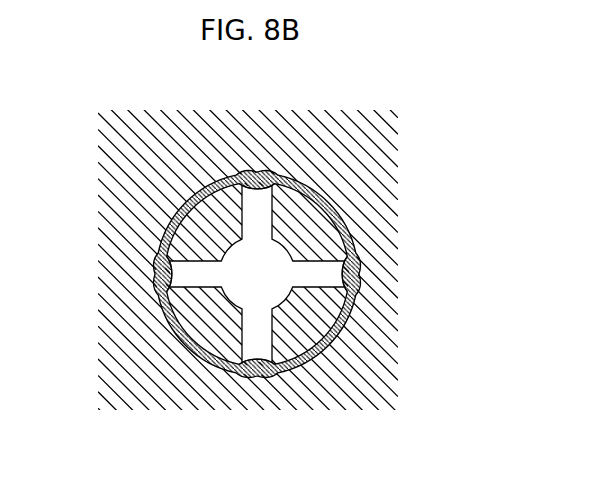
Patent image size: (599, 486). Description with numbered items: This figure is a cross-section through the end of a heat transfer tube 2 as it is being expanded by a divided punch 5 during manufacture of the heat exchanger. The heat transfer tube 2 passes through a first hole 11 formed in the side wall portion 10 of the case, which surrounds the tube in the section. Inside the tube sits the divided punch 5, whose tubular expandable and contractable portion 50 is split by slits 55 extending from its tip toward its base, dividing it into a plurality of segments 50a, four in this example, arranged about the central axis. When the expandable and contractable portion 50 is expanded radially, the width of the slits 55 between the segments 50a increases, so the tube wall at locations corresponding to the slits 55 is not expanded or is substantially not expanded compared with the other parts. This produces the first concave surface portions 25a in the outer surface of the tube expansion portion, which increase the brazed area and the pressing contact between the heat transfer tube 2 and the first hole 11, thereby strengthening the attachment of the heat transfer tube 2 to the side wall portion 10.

The heat transfer tube 2 is at (160, 200).
The divided punch 5 is at (256, 253).
The side wall portion 10 is at (312, 132).
The first hole 11 is at (160, 322).
The first concave surface portion 25a is at (253, 373).
The expandable and contractable portion 50 is at (217, 174).
The segment 50a is at (333, 347).
The slit 55 is at (258, 218).